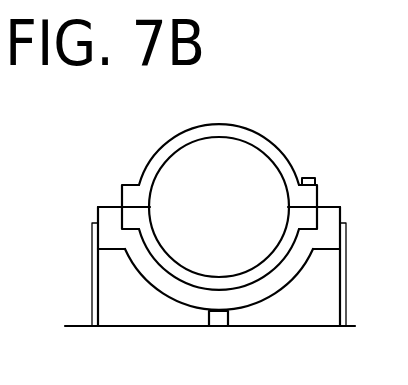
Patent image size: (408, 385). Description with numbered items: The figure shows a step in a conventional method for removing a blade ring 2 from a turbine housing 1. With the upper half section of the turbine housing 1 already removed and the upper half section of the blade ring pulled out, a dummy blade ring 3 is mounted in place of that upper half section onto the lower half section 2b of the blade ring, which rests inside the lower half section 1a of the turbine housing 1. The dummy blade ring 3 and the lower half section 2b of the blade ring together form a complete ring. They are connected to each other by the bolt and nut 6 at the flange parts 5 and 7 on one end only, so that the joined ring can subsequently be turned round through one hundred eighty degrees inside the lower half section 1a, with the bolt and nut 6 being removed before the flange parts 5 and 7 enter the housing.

The turbine housing 1 is at (273, 284).
The lower half section of the turbine housing 1a is at (171, 290).
The blade ring 2 is at (205, 285).
The lower half section of the blade ring 2b is at (261, 266).
The dummy blade ring 3 is at (256, 131).
The flange part 5 is at (130, 217).
The bolt and nut 6 is at (310, 178).
The flange part 7 is at (130, 196).